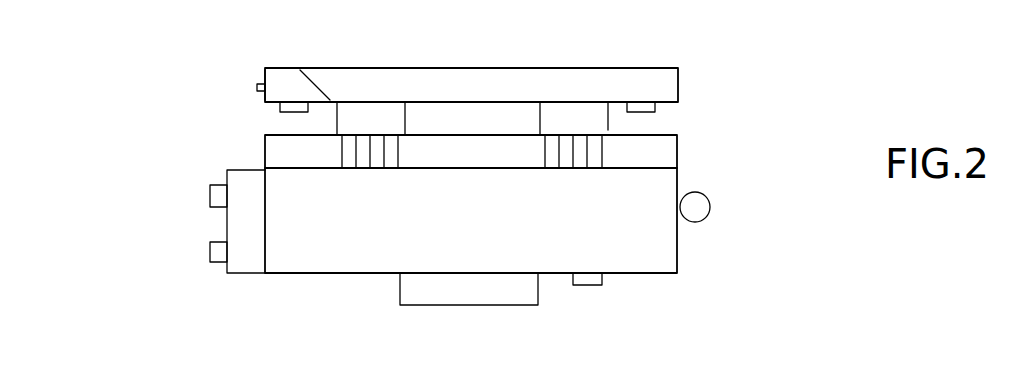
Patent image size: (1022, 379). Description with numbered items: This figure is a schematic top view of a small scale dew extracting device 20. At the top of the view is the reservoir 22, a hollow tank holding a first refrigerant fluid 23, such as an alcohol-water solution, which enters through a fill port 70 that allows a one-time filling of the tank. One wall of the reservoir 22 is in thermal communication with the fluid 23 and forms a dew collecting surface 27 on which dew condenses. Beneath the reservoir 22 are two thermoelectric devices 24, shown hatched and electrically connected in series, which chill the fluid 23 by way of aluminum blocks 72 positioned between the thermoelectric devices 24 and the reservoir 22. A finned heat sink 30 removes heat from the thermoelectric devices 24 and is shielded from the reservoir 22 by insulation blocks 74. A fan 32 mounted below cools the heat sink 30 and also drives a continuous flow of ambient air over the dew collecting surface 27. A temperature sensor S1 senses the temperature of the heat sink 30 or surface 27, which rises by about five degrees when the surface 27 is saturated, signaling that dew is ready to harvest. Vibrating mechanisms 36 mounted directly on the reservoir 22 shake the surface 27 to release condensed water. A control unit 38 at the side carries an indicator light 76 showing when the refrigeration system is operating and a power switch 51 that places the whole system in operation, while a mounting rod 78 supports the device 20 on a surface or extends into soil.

The dew extracting device 20 is at (780, 73).
The reservoir 22 is at (680, 80).
The first refrigerant fluid 23 is at (322, 80).
The thermoelectric device 24 is at (340, 153).
The dew collecting surface 27 is at (473, 65).
The heat sink 30 is at (678, 250).
The fan 32 is at (468, 310).
The vibrating mechanism 36 is at (277, 108).
The control unit 38 is at (242, 278).
The power switch 51 is at (207, 260).
The fill port 70 is at (255, 88).
The aluminum block 72 is at (337, 127).
The insulation block 74 is at (478, 118).
The indicator light 76 is at (205, 200).
The mounting rod 78 is at (711, 207).
The temperature sensor S1 is at (595, 288).